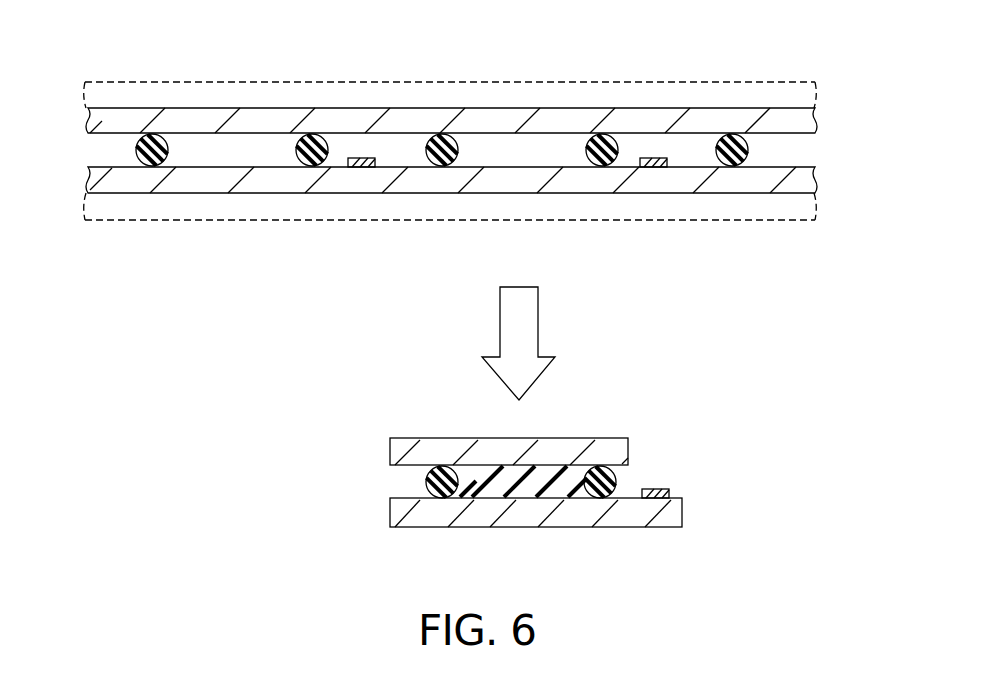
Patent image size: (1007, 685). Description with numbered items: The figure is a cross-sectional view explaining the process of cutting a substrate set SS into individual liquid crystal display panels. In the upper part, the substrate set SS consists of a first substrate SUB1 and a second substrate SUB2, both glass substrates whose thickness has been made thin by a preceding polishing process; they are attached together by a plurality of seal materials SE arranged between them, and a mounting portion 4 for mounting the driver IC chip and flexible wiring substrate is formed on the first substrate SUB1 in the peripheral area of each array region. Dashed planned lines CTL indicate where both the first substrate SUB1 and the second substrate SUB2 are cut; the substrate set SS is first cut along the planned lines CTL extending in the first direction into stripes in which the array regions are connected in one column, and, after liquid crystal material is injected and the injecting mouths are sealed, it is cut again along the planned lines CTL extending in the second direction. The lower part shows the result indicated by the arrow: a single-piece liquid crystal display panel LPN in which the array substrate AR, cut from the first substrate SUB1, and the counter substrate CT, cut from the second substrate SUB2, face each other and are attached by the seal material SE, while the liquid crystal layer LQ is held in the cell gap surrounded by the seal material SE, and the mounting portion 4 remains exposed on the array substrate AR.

The first substrate SUB1 is at (830, 188).
The second substrate SUB2 is at (830, 119).
The substrate set SS is at (83, 107).
The planned line CTL is at (128, 167).
The seal material SE is at (146, 166).
The mounting portion 4 is at (362, 168).
The counter substrate CT is at (378, 446).
The array substrate AR is at (378, 518).
The liquid crystal layer LQ is at (520, 490).
The liquid crystal display panel LPN is at (668, 425).